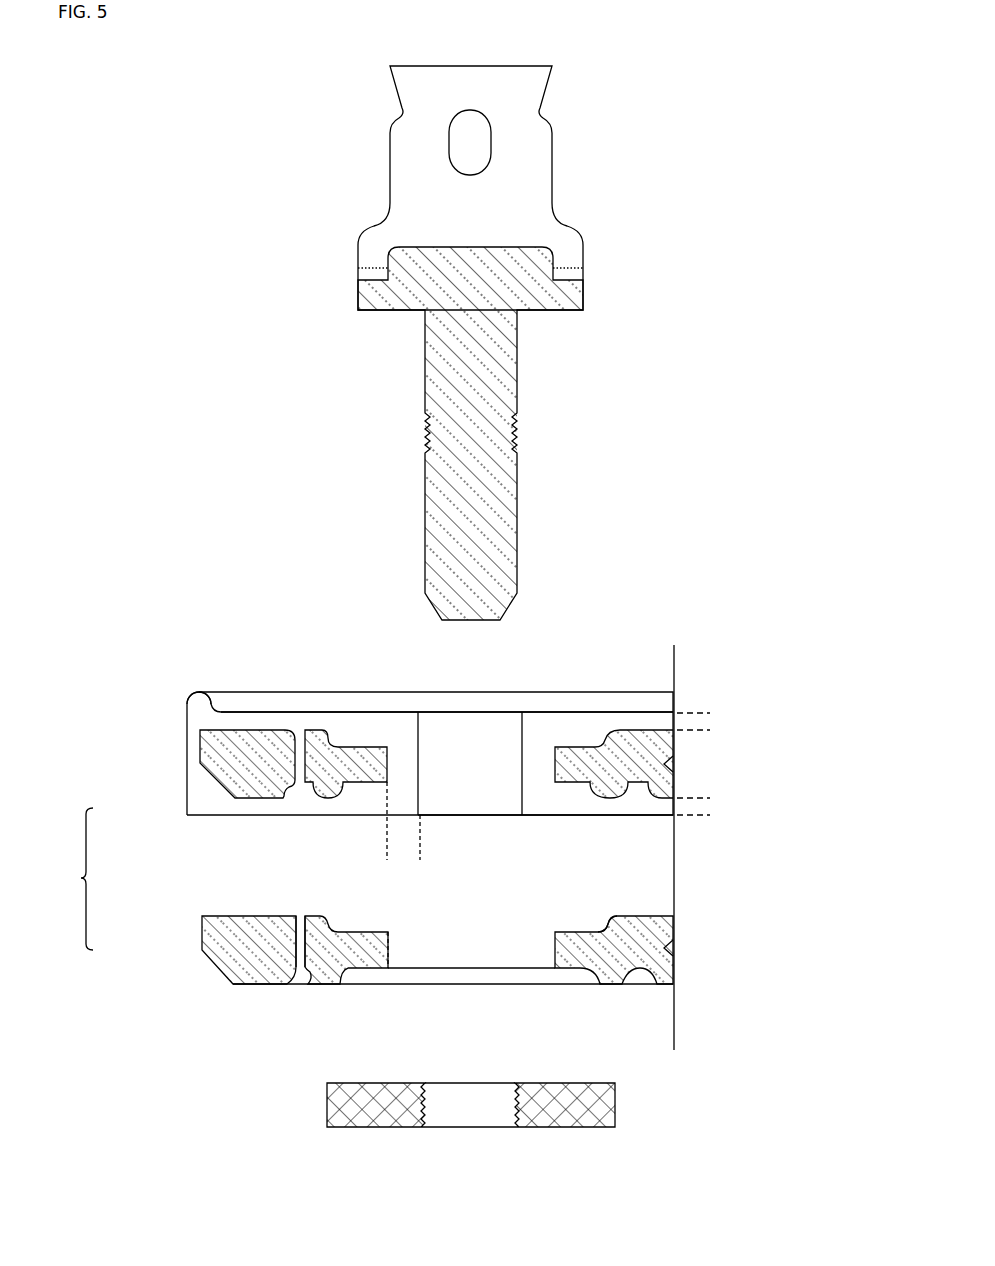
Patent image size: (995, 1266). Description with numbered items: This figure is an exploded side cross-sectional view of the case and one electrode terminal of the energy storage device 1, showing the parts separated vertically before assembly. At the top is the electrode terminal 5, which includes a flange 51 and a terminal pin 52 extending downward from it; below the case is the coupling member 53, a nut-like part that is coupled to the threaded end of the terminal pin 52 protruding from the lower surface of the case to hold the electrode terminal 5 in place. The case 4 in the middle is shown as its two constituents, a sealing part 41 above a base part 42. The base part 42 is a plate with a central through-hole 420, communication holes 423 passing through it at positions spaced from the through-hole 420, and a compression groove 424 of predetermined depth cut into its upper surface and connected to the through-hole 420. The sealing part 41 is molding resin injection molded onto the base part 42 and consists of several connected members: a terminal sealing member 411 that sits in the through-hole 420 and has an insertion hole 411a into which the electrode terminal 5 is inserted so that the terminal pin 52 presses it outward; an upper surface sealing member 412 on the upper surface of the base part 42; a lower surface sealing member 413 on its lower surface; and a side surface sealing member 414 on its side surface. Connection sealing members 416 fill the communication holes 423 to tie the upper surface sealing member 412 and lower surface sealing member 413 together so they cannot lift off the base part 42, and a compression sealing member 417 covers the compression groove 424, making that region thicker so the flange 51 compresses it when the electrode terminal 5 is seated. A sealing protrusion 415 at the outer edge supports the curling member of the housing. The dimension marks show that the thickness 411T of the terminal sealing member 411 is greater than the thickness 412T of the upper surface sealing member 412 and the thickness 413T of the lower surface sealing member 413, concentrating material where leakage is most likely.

The energy storage device 1 is at (68, 86).
The case 4 is at (78, 879).
The electrode terminal 5 is at (572, 140).
The sealing part 41 is at (186, 797).
The base part 42 is at (199, 932).
The flange 51 is at (571, 299).
The terminal pin 52 is at (504, 369).
The coupling member 53 is at (597, 1112).
The terminal sealing member 411 is at (537, 762).
The insertion hole 411a is at (475, 789).
The thickness of the terminal sealing member 411T is at (388, 853).
The upper surface sealing member 412 is at (651, 720).
The thickness of the upper surface sealing member 412T is at (716, 695).
The lower surface sealing member 413 is at (637, 815).
The thickness of the lower surface sealing member 413T is at (716, 780).
The side surface sealing member 414 is at (189, 757).
The sealing protrusion 415 is at (200, 705).
The connection sealing member 416 is at (302, 752).
The compression sealing member 417 is at (357, 740).
The through-hole 420 is at (472, 954).
The communication hole 423 is at (320, 958).
The compression groove 424 is at (588, 926).